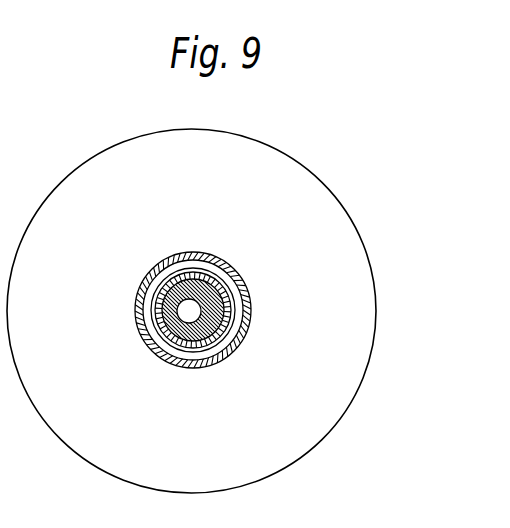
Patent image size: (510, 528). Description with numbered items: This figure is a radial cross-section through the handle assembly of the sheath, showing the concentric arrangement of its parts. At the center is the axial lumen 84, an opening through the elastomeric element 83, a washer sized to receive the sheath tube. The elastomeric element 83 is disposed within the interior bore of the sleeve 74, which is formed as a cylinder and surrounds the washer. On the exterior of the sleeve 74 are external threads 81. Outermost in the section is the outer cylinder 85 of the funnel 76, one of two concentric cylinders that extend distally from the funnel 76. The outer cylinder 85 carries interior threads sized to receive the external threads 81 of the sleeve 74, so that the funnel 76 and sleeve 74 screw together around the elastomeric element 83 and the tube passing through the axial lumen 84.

The funnel 76 is at (110, 144).
The outer cylinder 85 is at (225, 363).
The external threads 81 is at (242, 318).
The elastomeric element 83 is at (197, 272).
The sleeve 74 is at (218, 285).
The axial lumen 84 is at (182, 308).